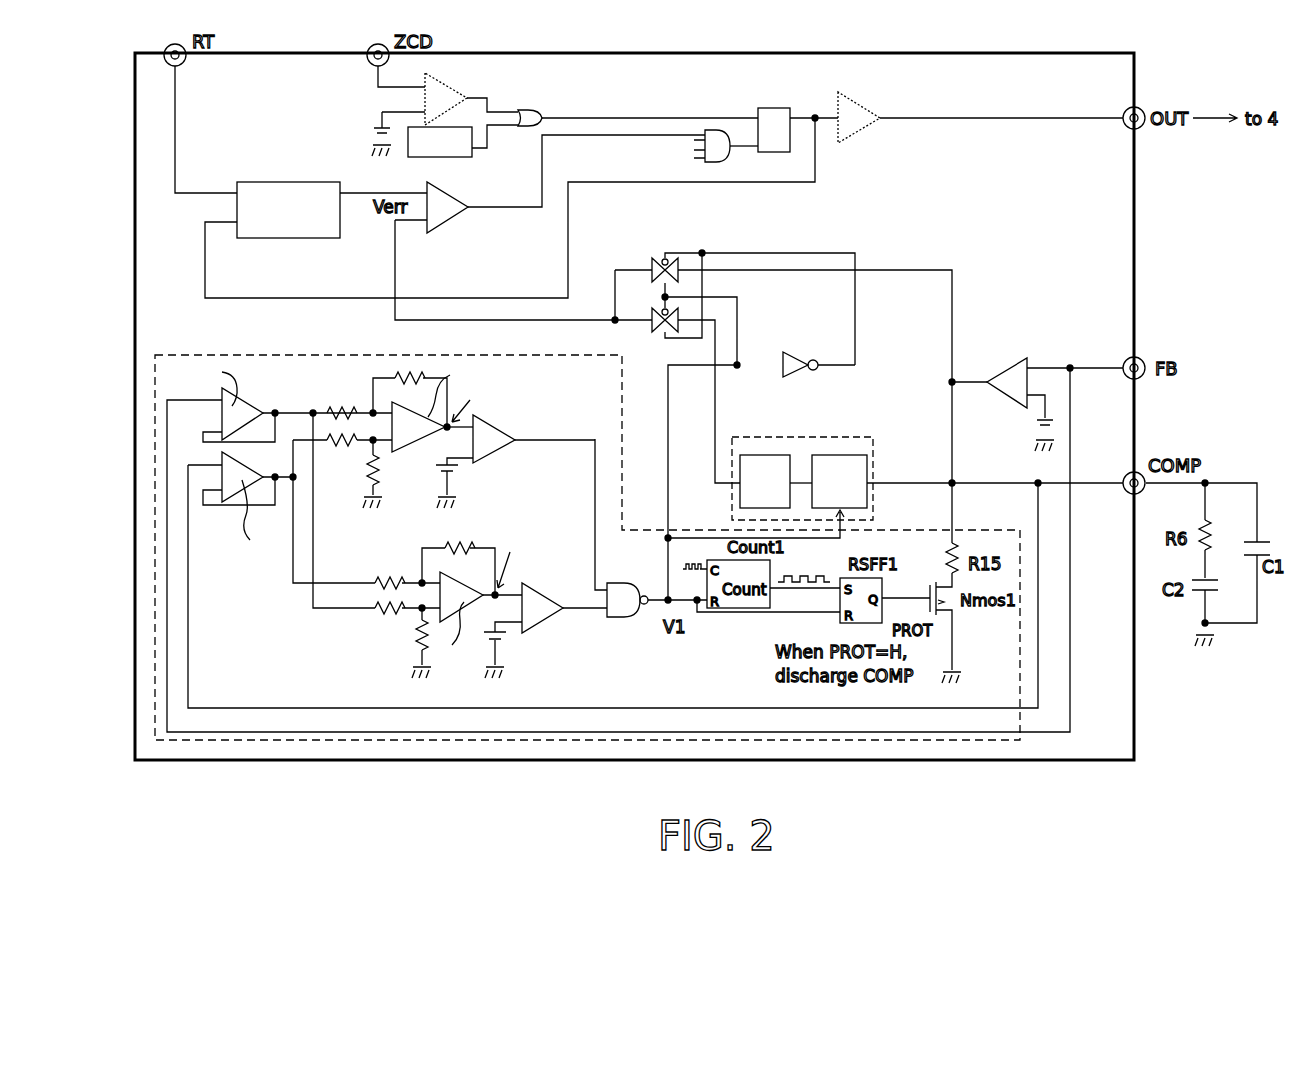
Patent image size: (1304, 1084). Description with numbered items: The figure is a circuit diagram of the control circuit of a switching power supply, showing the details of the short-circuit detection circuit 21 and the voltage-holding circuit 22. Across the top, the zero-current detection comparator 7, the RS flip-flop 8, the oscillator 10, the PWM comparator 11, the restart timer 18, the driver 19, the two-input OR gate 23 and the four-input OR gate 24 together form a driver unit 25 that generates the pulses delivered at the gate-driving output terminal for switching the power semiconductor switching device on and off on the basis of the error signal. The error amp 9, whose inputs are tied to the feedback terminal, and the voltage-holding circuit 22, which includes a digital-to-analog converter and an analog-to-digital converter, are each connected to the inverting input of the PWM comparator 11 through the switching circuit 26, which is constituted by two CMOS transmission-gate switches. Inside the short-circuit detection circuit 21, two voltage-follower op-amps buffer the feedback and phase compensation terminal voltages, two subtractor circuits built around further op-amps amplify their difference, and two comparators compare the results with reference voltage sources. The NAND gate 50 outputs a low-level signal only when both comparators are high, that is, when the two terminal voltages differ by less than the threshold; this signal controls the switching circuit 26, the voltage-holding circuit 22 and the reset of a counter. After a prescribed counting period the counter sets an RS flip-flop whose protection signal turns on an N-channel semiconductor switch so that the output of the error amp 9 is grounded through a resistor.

The zero-current detection comparator 7 is at (445, 78).
The RS flip-flop 8 is at (767, 108).
The error amp 9 is at (998, 367).
The oscillator 10 is at (288, 182).
The PWM comparator 11 is at (471, 210).
The restart timer 18 is at (452, 157).
The driver 19 is at (862, 129).
The short-circuit detection circuit 21 is at (300, 355).
The voltage-holding circuit 22 is at (730, 436).
The 2-input OR gate 23 is at (530, 112).
The 4-input OR gate 24 is at (728, 160).
The driver unit 25 is at (681, 96).
The switching circuit 26 is at (731, 235).
The NAND gate 50 is at (620, 620).